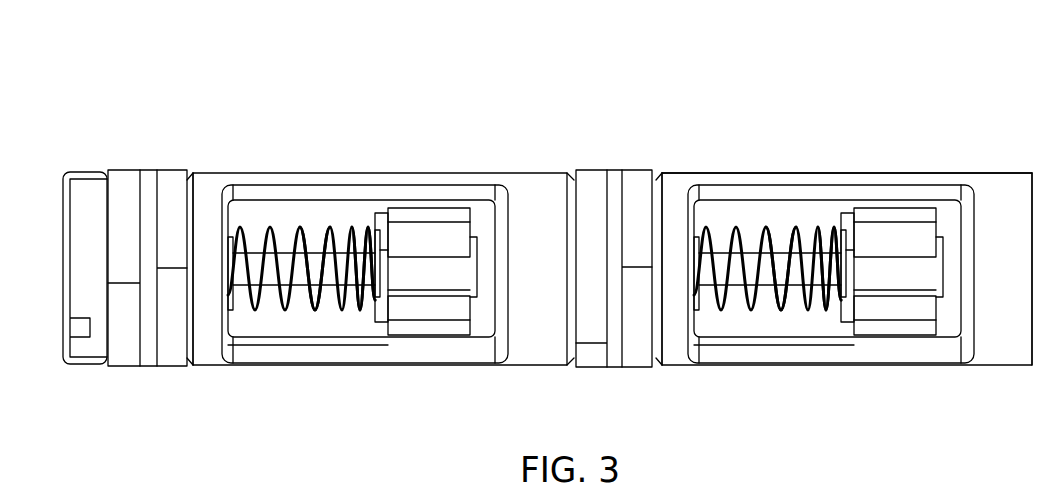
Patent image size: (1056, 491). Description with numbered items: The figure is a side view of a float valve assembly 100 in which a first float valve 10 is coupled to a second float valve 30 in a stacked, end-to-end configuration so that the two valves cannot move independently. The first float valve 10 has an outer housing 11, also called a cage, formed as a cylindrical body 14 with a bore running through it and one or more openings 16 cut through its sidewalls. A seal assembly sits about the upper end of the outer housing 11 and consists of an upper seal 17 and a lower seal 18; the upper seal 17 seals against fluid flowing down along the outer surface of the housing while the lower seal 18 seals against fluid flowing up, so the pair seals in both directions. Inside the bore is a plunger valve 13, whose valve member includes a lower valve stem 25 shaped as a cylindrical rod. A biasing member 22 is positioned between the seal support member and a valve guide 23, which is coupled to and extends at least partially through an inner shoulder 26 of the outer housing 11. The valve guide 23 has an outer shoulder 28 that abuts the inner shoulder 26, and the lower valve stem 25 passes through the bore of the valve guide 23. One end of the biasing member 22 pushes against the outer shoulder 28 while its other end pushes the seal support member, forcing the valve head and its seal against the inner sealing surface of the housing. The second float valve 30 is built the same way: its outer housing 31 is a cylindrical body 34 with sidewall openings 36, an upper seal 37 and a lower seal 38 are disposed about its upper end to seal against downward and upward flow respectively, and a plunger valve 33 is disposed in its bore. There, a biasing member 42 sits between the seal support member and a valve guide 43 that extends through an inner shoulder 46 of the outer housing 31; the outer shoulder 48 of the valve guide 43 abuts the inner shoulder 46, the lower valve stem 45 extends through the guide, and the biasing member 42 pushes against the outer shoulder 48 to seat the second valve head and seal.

The float valve assembly 100 is at (240, 87).
The first float valve 10 is at (283, 141).
The outer housing 11 is at (508, 172).
The plunger valve 13 is at (318, 231).
The cylindrical body 14 is at (210, 172).
The openings 16 is at (330, 186).
The upper seal 17 is at (124, 171).
The lower seal 18 is at (170, 171).
The biasing member 22 is at (325, 307).
The valve guide 23 is at (363, 288).
The lower valve stem 25 is at (275, 272).
The inner shoulder 26 is at (438, 240).
The outer shoulder 28 is at (382, 300).
The second float valve 30 is at (788, 142).
The outer housing 31 is at (1003, 172).
The plunger valve 33 is at (738, 303).
The cylindrical body 34 is at (990, 187).
The openings 36 is at (743, 187).
The upper seal 37 is at (591, 171).
The lower seal 38 is at (637, 171).
The biasing member 42 is at (790, 307).
The valve guide 43 is at (830, 288).
The lower valve stem 45 is at (715, 267).
The inner shoulder 46 is at (885, 240).
The outer shoulder 48 is at (848, 295).